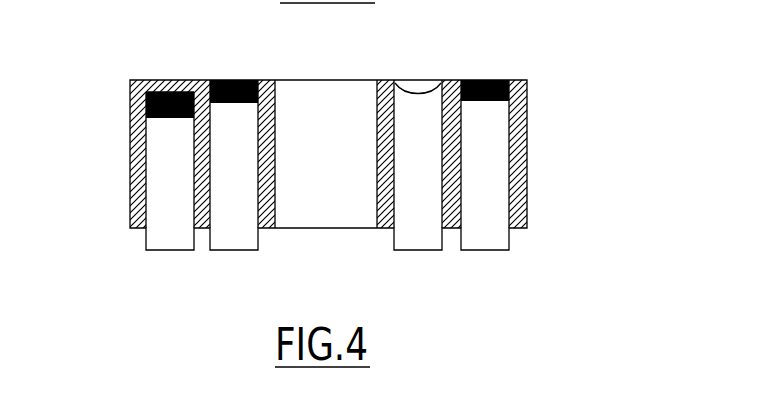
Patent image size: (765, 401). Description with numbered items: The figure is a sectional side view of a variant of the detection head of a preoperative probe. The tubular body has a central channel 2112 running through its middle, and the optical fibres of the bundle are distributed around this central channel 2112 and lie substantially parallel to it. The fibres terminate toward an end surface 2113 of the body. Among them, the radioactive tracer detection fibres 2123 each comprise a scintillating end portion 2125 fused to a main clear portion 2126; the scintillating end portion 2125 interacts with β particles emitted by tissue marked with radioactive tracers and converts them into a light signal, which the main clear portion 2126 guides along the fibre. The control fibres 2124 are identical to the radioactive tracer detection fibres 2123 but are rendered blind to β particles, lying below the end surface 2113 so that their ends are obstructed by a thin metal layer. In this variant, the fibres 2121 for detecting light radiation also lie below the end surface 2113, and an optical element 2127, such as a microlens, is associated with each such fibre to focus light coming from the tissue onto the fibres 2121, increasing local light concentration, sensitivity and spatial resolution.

The central channel 2112 is at (331, 105).
The end surface 2113 is at (520, 80).
The fibres for detecting light radiation 2121 is at (417, 228).
The radioactive tracer detection fibres 2123 is at (234, 236).
The control fibres 2124 is at (165, 238).
The scintillating end portion 2125 is at (225, 80).
The main clear portion 2126 is at (227, 155).
The optical element 2127 is at (418, 87).